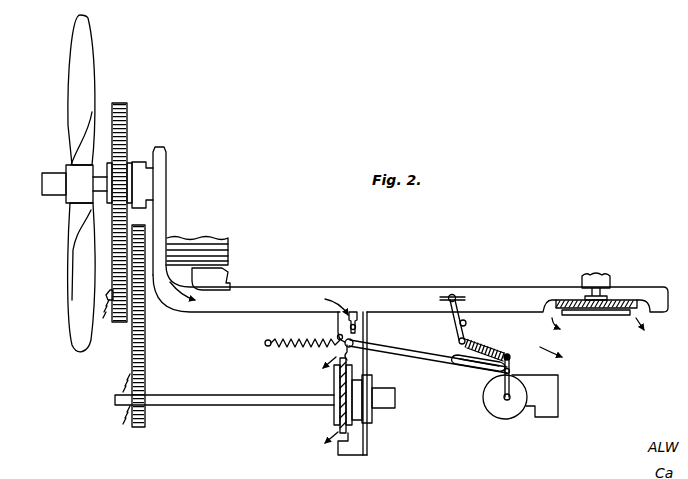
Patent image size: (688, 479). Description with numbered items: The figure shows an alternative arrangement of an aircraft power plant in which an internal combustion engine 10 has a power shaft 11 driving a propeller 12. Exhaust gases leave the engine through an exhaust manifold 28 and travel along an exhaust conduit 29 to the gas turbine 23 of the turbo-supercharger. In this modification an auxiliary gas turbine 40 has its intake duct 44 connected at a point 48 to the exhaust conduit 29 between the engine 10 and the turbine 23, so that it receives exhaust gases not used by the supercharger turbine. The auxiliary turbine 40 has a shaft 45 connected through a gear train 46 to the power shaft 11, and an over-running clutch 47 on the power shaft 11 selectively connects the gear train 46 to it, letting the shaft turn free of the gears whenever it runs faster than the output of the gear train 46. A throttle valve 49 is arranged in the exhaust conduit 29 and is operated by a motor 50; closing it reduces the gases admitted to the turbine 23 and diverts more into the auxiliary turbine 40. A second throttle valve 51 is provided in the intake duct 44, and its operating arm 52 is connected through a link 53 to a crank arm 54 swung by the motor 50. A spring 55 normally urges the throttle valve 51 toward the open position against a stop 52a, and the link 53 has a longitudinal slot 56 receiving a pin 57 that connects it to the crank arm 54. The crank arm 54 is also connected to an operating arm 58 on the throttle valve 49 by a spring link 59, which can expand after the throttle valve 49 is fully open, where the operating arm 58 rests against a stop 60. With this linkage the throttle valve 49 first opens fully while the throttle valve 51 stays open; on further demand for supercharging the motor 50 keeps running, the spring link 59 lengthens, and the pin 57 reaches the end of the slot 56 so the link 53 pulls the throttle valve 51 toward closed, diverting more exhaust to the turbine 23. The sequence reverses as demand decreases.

The internal combustion engine 10 is at (201, 250).
The power shaft 11 is at (104, 197).
The propeller 12 is at (84, 61).
The gas turbine 23 is at (565, 292).
The exhaust manifold 28 is at (156, 166).
The exhaust conduit 29 is at (293, 291).
The auxiliary gas turbine 40 is at (373, 446).
The intake duct 44 is at (366, 362).
The shaft 45 is at (232, 398).
The gear train 46 is at (127, 327).
The over-running clutch 47 is at (103, 160).
The connection point 48 is at (360, 311).
The throttle valve 49 is at (456, 296).
The motor 50 is at (510, 412).
The throttle valve 51 is at (360, 319).
The operating arm 52 is at (343, 338).
The stop 52a is at (337, 337).
The link 53 is at (437, 361).
The crank arm 54 is at (503, 399).
The spring 55 is at (328, 351).
The longitudinal slot 56 is at (470, 373).
The pin 57 is at (526, 373).
The operating arm 58 is at (452, 322).
The spring link 59 is at (494, 346).
The stop 60 is at (467, 324).